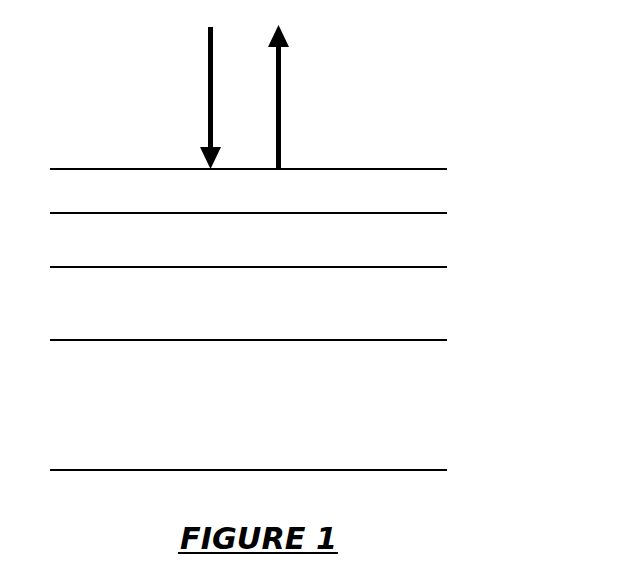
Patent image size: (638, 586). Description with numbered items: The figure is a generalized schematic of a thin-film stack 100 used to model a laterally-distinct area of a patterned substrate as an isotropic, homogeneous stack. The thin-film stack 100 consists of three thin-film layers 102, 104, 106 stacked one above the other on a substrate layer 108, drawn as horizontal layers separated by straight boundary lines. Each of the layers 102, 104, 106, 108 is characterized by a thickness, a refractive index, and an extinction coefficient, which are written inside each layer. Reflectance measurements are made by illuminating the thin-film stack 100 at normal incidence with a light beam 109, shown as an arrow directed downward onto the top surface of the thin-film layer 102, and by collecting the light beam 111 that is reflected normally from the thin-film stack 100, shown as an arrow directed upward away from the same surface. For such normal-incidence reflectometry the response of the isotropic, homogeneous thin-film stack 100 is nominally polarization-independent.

The thin-film stack 100 is at (84, 143).
The thin-film layer 102 is at (438, 187).
The thin-film layer 104 is at (438, 242).
The thin-film layer 106 is at (438, 302).
The substrate layer 108 is at (433, 404).
The light beam 109 is at (208, 66).
The reflected light beam 111 is at (282, 87).